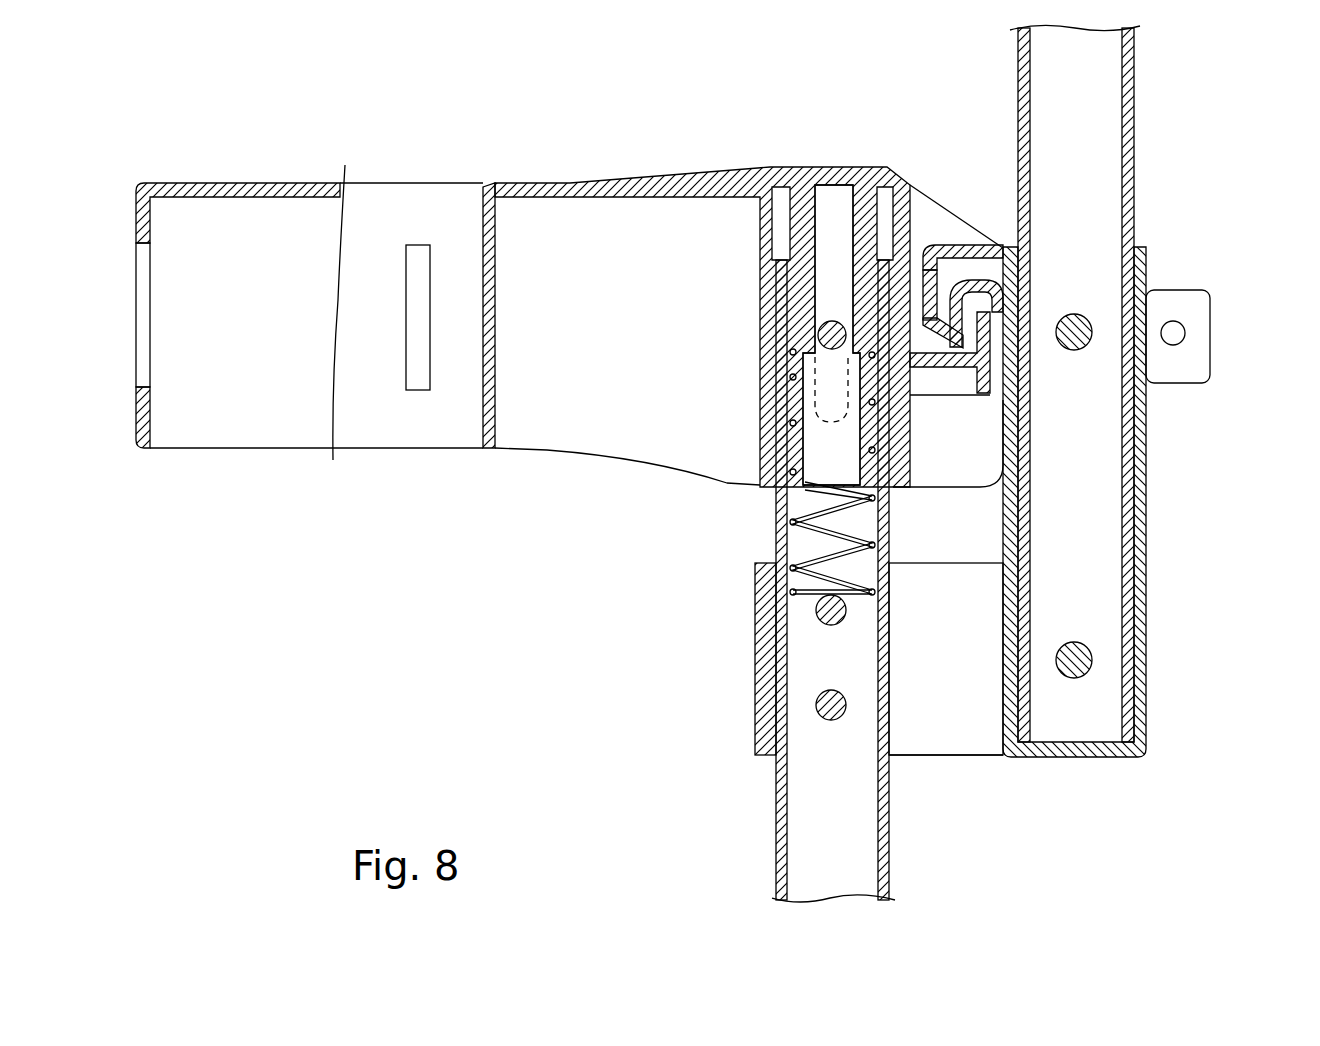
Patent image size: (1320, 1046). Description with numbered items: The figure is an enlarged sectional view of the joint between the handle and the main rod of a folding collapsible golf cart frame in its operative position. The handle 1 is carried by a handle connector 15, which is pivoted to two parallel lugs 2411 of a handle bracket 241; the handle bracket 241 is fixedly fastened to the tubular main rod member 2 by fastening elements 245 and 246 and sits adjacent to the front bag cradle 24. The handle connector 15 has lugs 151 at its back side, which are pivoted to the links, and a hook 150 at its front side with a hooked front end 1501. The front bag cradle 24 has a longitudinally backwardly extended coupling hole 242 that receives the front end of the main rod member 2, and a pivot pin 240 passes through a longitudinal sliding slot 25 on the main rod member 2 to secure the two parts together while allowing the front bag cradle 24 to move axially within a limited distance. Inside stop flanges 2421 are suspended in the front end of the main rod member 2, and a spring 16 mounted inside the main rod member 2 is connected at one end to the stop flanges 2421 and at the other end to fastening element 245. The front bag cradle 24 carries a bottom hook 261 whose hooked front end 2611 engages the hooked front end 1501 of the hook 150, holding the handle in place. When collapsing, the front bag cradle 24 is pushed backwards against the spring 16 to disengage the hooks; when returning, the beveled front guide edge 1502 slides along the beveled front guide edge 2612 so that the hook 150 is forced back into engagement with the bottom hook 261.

The handle 1 is at (1145, 117).
The tubular main rod member 2 is at (765, 528).
The handle connector 15 is at (1146, 521).
The spring 16 is at (850, 503).
The front bag cradle 24 is at (137, 224).
The longitudinal sliding slot 25 is at (817, 395).
The hook 150 is at (967, 243).
The lug 151 is at (1198, 291).
The pivot pin 240 is at (822, 334).
The handle bracket 241 is at (990, 757).
The coupling hole 242 is at (782, 200).
The fastening element 245 is at (820, 620).
The fastening element 246 is at (820, 707).
The bottom hook 261 is at (947, 395).
The hooked front end 1501 is at (927, 292).
The beveled front guide edge 1502 is at (937, 323).
The parallel lug 2411 is at (938, 742).
The inside stop flange 2421 is at (813, 351).
The hooked front end 2611 is at (995, 365).
The beveled front guide edge 2612 is at (975, 312).